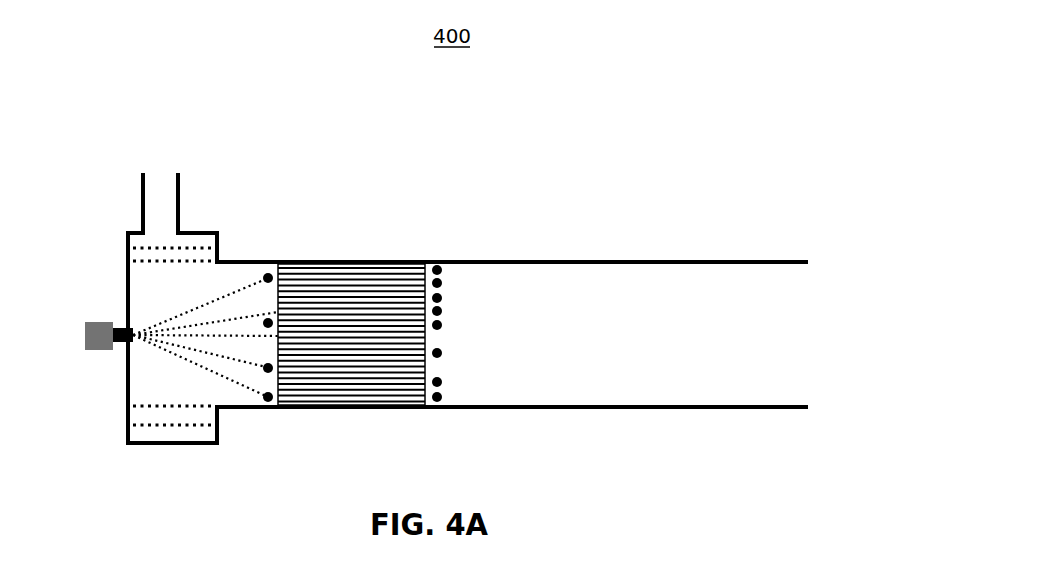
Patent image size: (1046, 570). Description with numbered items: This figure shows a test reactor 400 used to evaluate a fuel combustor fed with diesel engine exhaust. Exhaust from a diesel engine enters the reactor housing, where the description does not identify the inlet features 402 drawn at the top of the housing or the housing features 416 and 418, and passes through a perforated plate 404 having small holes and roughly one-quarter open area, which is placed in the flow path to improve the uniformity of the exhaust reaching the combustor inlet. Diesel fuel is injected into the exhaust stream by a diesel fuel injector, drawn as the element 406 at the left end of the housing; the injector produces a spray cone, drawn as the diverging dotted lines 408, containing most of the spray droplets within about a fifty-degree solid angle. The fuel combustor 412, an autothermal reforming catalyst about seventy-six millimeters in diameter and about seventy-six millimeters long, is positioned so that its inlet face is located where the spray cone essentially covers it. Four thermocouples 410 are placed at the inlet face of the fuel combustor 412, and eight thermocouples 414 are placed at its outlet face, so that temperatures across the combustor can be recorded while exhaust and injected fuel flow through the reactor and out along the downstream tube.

The test reactor 400 is at (468, 308).
The inlet/outlet pipes 402 is at (157, 232).
The perforated plate 404 is at (157, 255).
The radiation source 406 is at (103, 322).
The radiation beams 408 is at (220, 310).
The thermocouples 410 is at (269, 278).
The fuel combustor 412 is at (378, 263).
The thermocouples 414 is at (439, 266).
The tube walls 416 is at (495, 250).
The bottom seal layers 418 is at (187, 432).